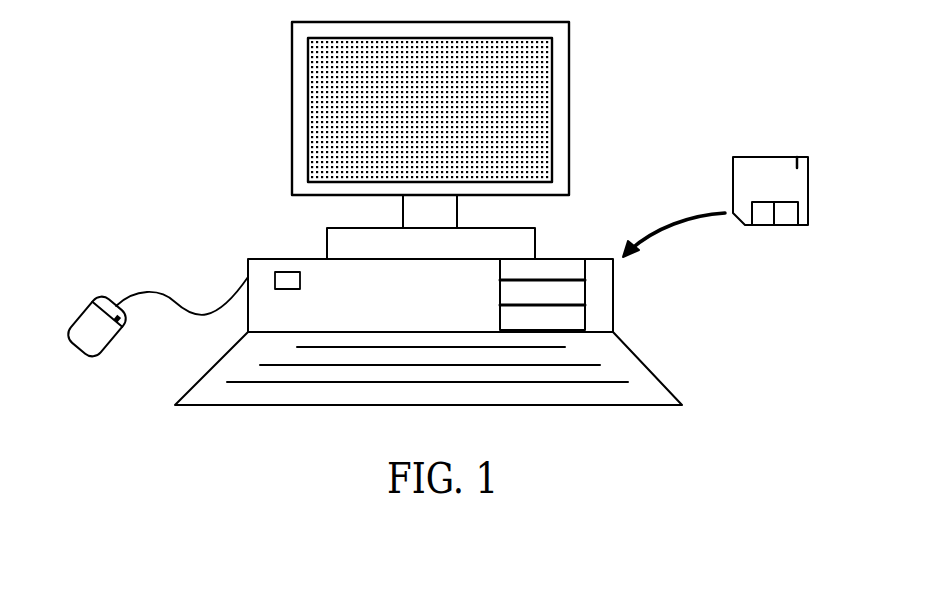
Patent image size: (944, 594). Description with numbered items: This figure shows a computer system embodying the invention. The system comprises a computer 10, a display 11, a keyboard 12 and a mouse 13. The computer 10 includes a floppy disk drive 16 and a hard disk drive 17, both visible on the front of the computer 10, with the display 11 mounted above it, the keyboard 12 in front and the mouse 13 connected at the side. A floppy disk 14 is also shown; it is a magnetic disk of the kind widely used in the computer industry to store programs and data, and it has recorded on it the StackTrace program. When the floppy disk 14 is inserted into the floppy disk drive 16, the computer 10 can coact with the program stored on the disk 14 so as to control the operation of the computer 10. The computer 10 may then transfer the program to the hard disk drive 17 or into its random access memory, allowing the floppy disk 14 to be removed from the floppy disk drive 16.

The computer 10 is at (288, 259).
The display 11 is at (292, 70).
The keyboard 12 is at (610, 348).
The mouse 13 is at (85, 308).
The floppy disk 14 is at (770, 157).
The floppy disk drive 16 is at (570, 267).
The hard disk drive 17 is at (578, 308).